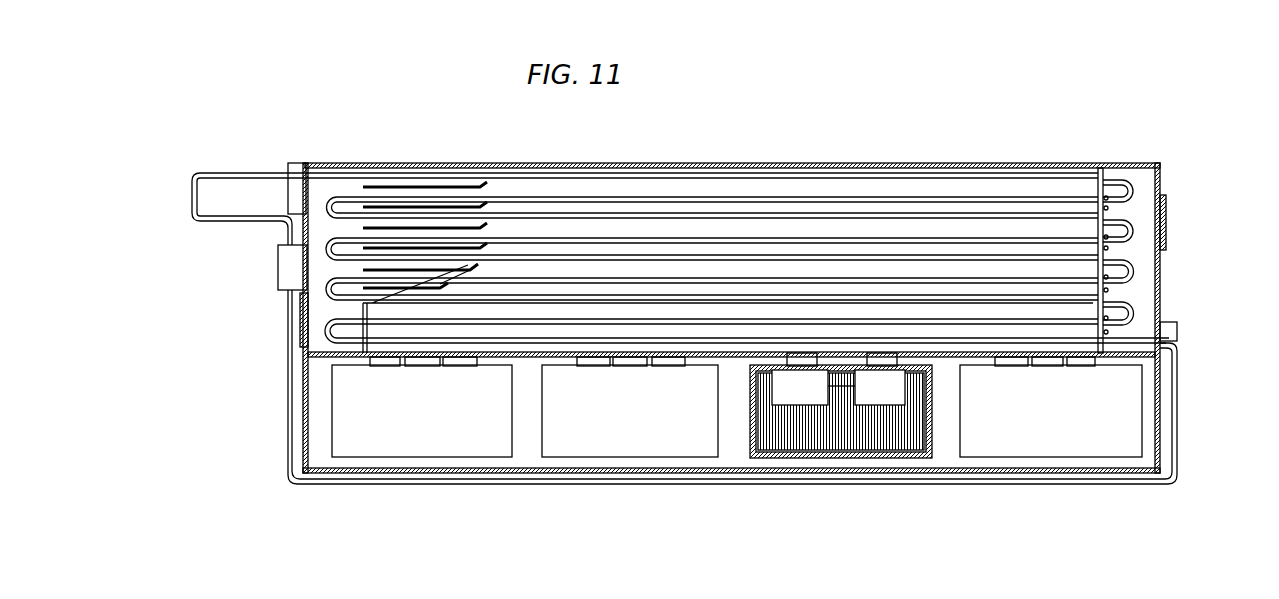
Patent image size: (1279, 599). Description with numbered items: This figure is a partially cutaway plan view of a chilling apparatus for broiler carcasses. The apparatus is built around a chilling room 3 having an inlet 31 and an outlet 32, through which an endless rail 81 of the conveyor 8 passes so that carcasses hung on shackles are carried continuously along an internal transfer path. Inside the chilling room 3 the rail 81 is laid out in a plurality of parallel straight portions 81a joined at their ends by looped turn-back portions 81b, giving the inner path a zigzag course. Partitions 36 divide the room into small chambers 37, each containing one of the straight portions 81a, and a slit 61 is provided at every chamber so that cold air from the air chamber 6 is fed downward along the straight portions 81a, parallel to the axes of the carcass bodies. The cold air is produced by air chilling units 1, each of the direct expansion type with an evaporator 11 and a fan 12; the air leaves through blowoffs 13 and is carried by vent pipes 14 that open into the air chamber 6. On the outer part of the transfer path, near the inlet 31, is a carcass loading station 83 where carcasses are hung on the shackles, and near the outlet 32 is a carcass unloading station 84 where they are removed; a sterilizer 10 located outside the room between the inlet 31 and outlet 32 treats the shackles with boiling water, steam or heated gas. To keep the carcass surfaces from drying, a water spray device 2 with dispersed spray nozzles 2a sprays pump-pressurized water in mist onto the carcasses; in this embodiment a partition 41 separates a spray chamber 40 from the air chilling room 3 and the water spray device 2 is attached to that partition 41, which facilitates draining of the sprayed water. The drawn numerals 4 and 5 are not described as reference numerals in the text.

The air chilling unit 1 is at (843, 445).
The water spray device 2 is at (1120, 246).
The spray nozzle 2a is at (1107, 193).
The chilling room 3 is at (801, 165).
The housing space 4 is at (736, 448).
The partition plate 5 is at (703, 358).
The air chamber 6 is at (847, 190).
The conveyor 8 is at (380, 190).
The sterilizer 10 is at (285, 266).
The evaporator 11 is at (850, 446).
The fan 12 is at (806, 398).
The blowoff 13 is at (795, 368).
The vent pipe 14 is at (958, 448).
The inlet 31 is at (309, 163).
The outlet 32 is at (1172, 341).
The partition 36 is at (454, 205).
The small chamber 37 is at (418, 192).
The spray chamber 40 is at (1148, 195).
The partition 41 is at (1105, 297).
The slit 61 is at (700, 178).
The rail 81 is at (762, 200).
The straight portion 81a is at (927, 198).
The turn-back portion 81b is at (327, 331).
The carcass loading station 83 is at (232, 172).
The carcass unloading station 84 is at (1178, 412).